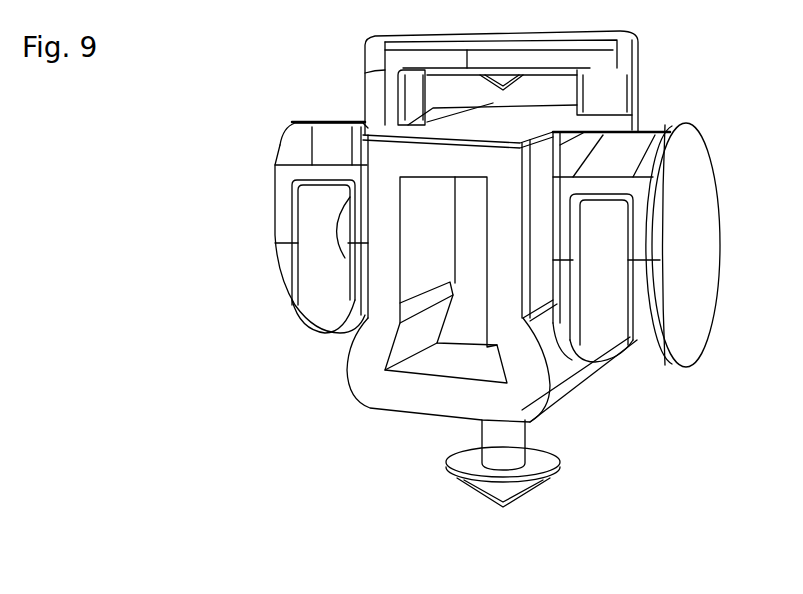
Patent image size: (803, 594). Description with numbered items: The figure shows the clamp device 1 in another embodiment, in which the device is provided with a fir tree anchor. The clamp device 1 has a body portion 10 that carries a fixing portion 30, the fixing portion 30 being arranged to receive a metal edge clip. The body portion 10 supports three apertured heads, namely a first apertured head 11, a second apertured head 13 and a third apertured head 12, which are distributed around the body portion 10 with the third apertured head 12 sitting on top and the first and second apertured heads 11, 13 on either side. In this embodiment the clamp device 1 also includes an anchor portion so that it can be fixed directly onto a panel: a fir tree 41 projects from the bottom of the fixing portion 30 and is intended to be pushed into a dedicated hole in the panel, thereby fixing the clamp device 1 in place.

The clamp device 1 is at (677, 437).
The body portion 10 is at (377, 310).
The first apertured head 11 is at (279, 243).
The third apertured head 12 is at (607, 53).
The second apertured head 13 is at (705, 250).
The fixing portion 30 is at (367, 393).
The fir tree 41 is at (478, 483).